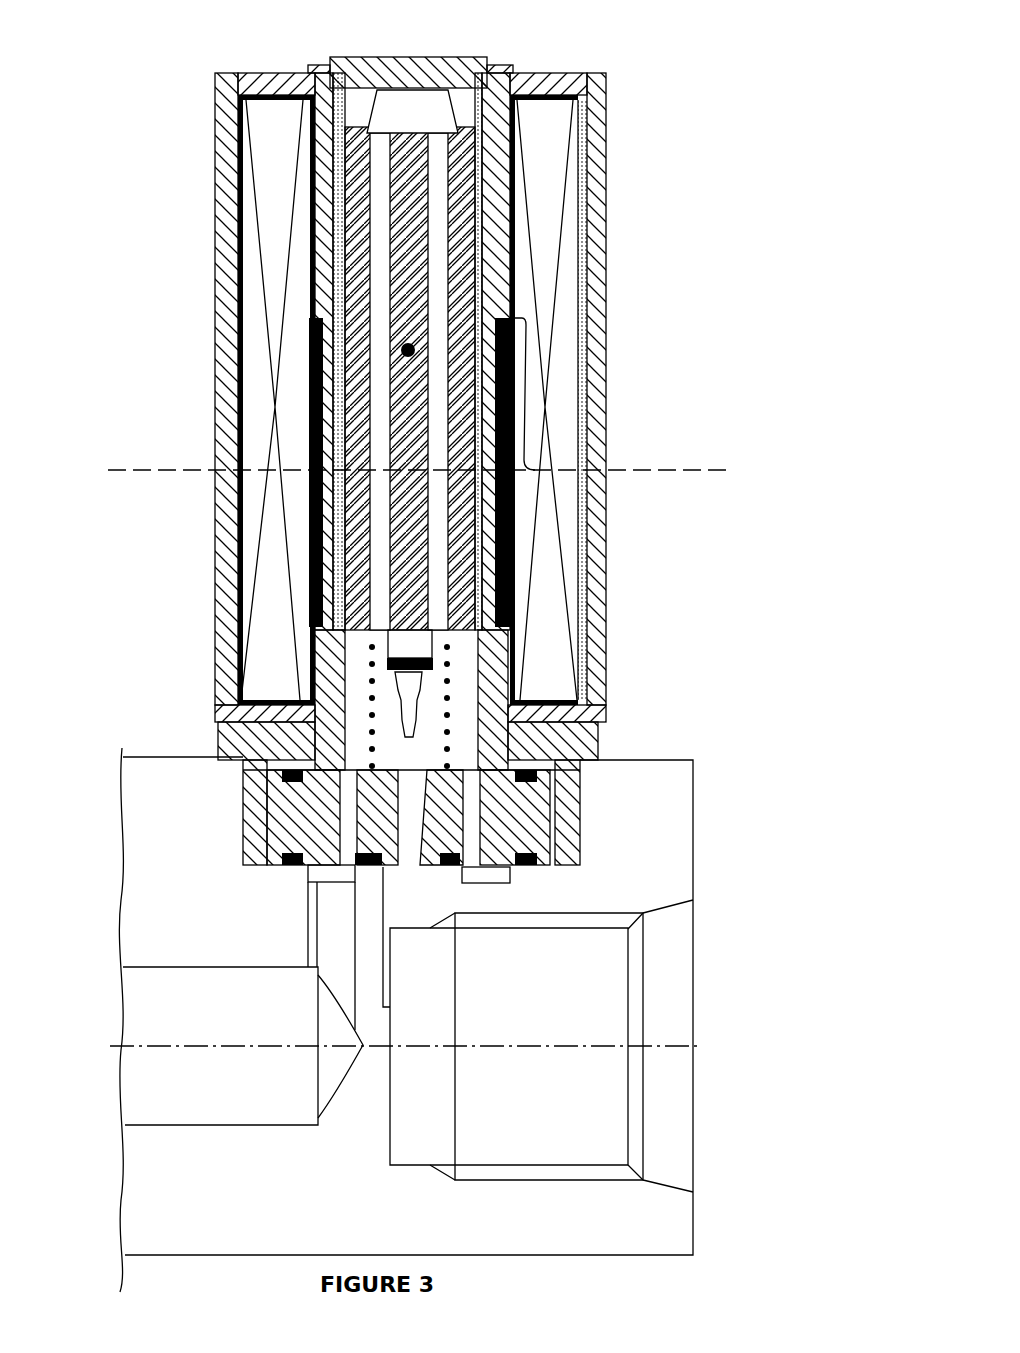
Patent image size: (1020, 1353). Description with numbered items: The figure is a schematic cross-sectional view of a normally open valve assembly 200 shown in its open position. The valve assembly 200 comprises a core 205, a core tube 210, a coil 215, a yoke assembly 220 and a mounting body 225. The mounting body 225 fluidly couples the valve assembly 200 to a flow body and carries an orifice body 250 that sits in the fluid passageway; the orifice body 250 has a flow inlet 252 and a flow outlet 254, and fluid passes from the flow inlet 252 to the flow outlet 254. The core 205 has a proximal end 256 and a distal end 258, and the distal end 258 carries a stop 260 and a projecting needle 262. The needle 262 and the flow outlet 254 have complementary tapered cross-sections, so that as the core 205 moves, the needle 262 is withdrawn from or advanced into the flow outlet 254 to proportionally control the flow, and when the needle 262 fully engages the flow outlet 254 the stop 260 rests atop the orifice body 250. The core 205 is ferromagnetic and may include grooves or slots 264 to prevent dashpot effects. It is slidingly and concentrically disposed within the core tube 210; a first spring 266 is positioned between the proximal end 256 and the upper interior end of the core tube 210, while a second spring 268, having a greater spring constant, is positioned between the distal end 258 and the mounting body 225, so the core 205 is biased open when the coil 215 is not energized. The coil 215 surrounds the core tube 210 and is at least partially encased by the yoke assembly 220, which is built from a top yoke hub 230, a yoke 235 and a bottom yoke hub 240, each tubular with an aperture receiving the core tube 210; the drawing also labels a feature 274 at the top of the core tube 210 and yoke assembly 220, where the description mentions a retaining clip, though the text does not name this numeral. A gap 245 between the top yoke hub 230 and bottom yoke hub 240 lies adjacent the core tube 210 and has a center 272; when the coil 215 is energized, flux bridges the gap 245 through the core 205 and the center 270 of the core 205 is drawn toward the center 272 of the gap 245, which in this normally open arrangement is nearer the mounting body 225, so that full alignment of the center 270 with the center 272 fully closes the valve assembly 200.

The valve assembly 200 is at (622, 52).
The core 205 is at (410, 135).
The core tube 210 is at (410, 57).
The coil 215 is at (275, 200).
The yoke assembly 220 is at (215, 138).
The mounting body 225 is at (240, 768).
The top yoke hub 230 is at (232, 73).
The yoke 235 is at (215, 300).
The bottom yoke hub 240 is at (313, 645).
The gap 245 is at (636, 468).
The orifice body 250 is at (267, 860).
The flow inlet 252 is at (353, 835).
The flow outlet 254 is at (412, 850).
The proximal end 256 is at (500, 97).
The distal end 258 is at (313, 662).
The stop 260 is at (405, 650).
The needle 262 is at (543, 728).
The grooves or slots 264 is at (313, 495).
The first spring 266 is at (334, 68).
The second spring 268 is at (447, 692).
The center of the core 270 is at (402, 350).
The center of the gap 272 is at (114, 468).
The retaining flange 274 is at (492, 66).